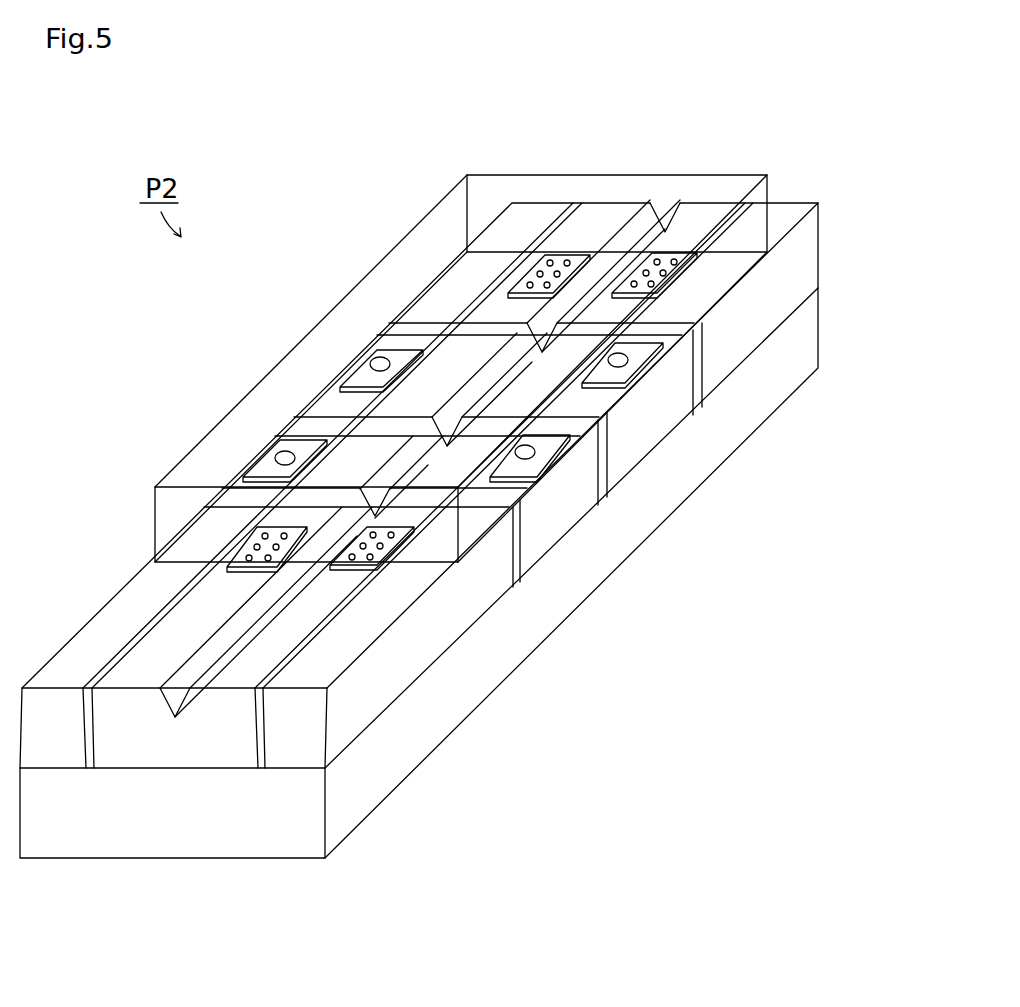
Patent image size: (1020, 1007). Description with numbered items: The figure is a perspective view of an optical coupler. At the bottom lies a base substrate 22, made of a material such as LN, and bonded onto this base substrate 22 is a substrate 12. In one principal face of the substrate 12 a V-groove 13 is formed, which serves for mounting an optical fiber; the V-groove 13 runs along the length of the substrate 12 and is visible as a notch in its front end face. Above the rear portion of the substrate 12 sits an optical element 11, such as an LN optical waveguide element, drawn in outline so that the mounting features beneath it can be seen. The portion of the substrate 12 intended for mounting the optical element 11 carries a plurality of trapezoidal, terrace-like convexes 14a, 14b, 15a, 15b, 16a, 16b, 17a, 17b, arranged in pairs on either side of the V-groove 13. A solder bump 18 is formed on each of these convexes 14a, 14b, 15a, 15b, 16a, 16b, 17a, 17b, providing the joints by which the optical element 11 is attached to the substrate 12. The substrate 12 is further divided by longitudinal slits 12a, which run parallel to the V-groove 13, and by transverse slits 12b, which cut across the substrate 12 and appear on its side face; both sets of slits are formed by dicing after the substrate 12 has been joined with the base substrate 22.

The optical element 11 is at (491, 192).
The substrate 12 is at (693, 397).
The longitudinal slits 12a is at (265, 733).
The transverse slits 12b is at (523, 530).
The V-groove 13 is at (177, 697).
The trapezoidal convex 14a is at (240, 553).
The trapezoidal convex 14b is at (400, 538).
The trapezoidal convex 15a is at (260, 455).
The trapezoidal convex 15b is at (580, 442).
The trapezoidal convex 16a is at (355, 375).
The trapezoidal convex 16b is at (650, 347).
The trapezoidal convex 17a is at (515, 277).
The trapezoidal convex 17b is at (695, 268).
The solder bump 18 is at (378, 360).
The base substrate 22 is at (478, 676).